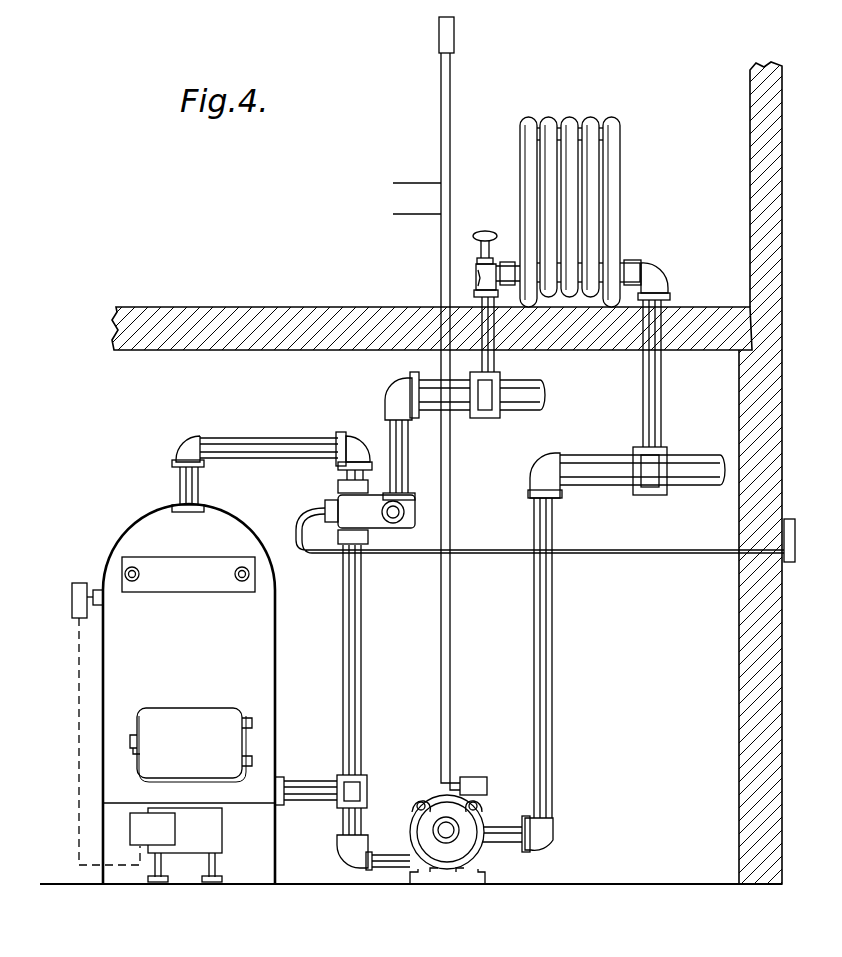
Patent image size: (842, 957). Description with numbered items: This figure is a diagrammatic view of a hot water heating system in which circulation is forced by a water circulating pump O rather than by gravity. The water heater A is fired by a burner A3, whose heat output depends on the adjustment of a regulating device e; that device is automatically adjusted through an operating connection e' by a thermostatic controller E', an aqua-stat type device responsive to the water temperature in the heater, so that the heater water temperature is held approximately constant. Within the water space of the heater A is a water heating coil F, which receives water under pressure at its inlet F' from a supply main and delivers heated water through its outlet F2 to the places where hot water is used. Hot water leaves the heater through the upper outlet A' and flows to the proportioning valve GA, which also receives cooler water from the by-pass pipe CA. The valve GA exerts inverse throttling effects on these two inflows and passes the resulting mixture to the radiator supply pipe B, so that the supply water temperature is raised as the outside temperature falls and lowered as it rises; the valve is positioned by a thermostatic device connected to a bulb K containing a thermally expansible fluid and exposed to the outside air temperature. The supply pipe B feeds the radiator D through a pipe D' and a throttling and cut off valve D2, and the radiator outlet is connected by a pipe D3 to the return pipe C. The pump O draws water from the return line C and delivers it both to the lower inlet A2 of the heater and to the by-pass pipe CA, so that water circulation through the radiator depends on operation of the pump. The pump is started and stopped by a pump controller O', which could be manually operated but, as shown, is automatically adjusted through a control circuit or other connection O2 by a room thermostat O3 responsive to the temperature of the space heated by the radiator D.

The water heater A is at (189, 694).
The upper outlet A' is at (272, 452).
The lower inlet A2 is at (306, 800).
The burner A3 is at (185, 845).
The radiator supply pipe B is at (400, 460).
The return pipe C is at (553, 736).
The by-pass pipe CA is at (350, 697).
The radiator D is at (585, 212).
The radiator inlet pipe D' is at (517, 357).
The throttling and cut off valve D2 is at (475, 262).
The radiator outlet pipe D3 is at (662, 400).
The thermostatic controller E' is at (66, 600).
The regulating device e is at (152, 829).
The operating connection e' is at (88, 741).
The water heating coil F is at (188, 557).
The coil inlet F' is at (88, 558).
The coil outlet F2 is at (250, 574).
The proportioning valve GA is at (345, 502).
The bulb K is at (796, 538).
The water circulating pump O is at (463, 839).
The pump controller O' is at (479, 782).
The control circuit O2 is at (452, 110).
The room thermostat O3 is at (455, 44).